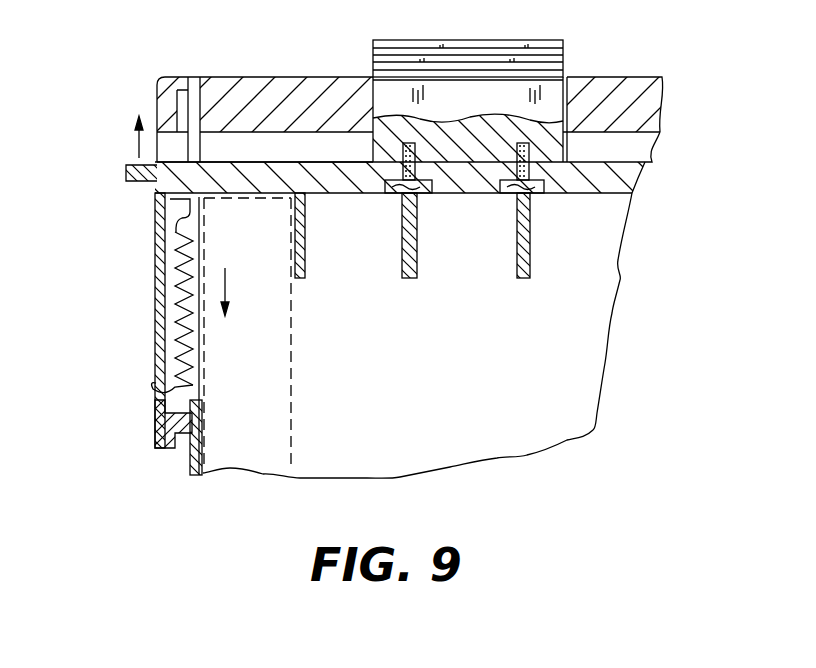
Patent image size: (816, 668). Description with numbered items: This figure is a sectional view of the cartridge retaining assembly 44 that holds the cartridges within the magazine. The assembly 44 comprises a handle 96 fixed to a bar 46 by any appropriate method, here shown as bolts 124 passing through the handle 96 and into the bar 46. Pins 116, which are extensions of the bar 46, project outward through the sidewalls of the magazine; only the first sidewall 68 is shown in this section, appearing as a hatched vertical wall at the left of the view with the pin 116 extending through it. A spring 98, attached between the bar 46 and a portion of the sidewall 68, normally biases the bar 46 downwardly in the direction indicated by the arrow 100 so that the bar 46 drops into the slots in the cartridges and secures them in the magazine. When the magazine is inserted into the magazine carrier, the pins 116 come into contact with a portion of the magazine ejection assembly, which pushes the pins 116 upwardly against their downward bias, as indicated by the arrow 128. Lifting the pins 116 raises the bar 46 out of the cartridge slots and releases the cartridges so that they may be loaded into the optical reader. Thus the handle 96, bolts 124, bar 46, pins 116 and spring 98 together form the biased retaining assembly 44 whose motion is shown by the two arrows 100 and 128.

The cartridge retaining assembly 44 is at (350, 62).
The handle 96 is at (563, 38).
The arrow 128 is at (137, 128).
The pins 116 is at (141, 183).
The bar 46 is at (628, 177).
The bolts 124 is at (517, 168).
The first sidewall 68 is at (162, 278).
The spring 98 is at (190, 247).
The arrow 100 is at (228, 290).